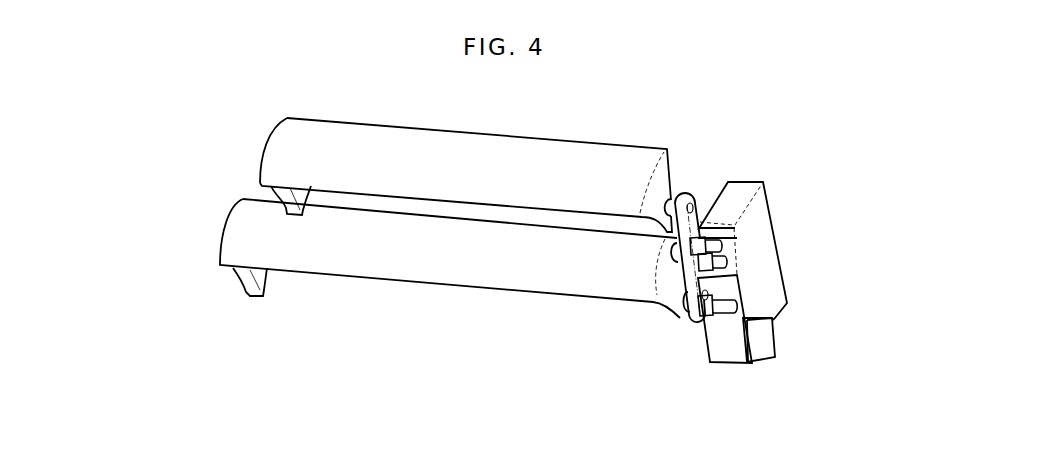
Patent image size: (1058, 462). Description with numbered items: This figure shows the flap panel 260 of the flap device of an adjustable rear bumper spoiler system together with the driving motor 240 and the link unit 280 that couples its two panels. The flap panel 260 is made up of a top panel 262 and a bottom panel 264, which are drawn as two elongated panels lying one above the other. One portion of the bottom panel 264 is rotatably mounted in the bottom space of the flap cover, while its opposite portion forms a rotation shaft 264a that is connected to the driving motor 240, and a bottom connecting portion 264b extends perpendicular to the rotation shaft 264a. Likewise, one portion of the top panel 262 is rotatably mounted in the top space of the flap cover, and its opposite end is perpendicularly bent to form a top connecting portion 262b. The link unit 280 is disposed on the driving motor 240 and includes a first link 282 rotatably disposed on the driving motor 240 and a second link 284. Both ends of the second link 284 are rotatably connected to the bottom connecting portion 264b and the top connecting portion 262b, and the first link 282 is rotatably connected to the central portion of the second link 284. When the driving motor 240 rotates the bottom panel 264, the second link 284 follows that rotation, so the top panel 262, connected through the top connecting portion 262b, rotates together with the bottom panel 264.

The driving motor 240 is at (750, 225).
The flap panel 260 is at (133, 150).
The top panel 262 is at (288, 148).
The top connecting portion 262b is at (673, 198).
The bottom panel 264 is at (263, 232).
The rotation shaft 264a is at (713, 283).
The bottom connecting portion 264b is at (683, 297).
The link unit 280 is at (872, 242).
The first link 282 is at (727, 268).
The second link 284 is at (733, 297).